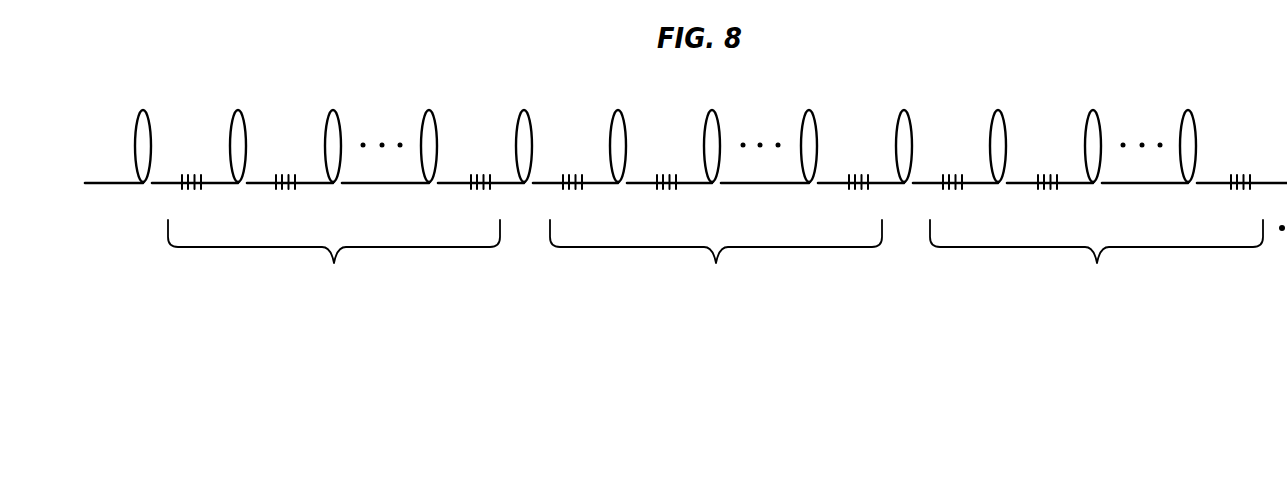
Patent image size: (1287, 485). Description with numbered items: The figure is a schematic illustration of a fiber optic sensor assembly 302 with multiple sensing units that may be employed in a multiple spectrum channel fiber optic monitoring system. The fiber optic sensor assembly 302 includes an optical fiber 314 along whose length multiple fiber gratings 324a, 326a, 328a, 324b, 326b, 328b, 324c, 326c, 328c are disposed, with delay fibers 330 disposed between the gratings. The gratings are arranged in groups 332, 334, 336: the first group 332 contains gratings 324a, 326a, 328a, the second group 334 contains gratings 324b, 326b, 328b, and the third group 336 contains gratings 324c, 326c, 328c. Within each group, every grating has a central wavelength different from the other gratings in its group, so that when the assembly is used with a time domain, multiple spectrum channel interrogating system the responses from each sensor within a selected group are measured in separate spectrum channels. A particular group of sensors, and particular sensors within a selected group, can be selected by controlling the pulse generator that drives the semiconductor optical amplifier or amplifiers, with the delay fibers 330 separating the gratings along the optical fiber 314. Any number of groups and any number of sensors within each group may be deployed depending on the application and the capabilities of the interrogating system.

The fiber optic sensor assembly 302 is at (430, 88).
The optical fiber 314 is at (113, 184).
The fiber grating 324a is at (191, 168).
The fiber grating 326a is at (286, 168).
The fiber grating 328a is at (480, 168).
The fiber grating 324b is at (572, 168).
The fiber grating 326b is at (665, 168).
The fiber grating 328b is at (859, 168).
The fiber grating 324c is at (949, 168).
The fiber grating 326c is at (1045, 168).
The fiber grating 328c is at (1240, 168).
The delay fiber 330 is at (142, 109).
The group 332 is at (334, 260).
The group 334 is at (716, 260).
The group 336 is at (1096, 260).